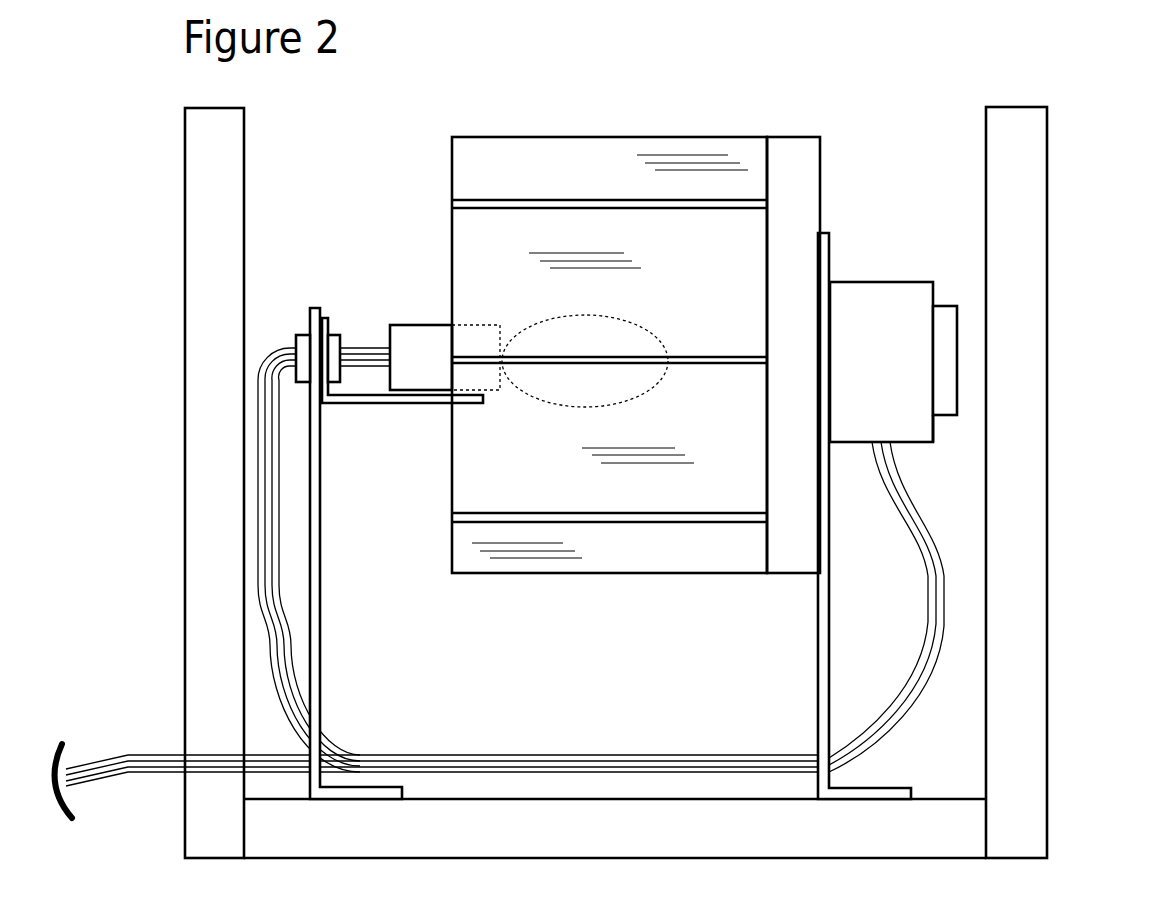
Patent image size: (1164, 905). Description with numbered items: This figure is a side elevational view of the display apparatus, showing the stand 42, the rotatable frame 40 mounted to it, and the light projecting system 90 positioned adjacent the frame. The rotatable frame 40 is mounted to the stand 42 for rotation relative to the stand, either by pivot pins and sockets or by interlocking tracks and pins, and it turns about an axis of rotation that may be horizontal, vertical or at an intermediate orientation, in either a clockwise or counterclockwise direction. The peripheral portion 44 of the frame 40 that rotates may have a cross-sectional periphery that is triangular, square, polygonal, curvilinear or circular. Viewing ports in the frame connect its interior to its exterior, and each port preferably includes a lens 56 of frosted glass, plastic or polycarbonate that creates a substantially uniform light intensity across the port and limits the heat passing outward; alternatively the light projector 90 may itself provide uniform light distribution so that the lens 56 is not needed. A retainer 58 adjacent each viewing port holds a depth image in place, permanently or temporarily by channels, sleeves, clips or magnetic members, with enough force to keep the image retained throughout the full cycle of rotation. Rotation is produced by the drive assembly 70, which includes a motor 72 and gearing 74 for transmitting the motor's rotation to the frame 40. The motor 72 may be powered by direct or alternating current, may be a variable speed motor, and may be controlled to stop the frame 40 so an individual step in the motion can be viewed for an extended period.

The rotatable frame 40 is at (786, 137).
The stand 42 is at (202, 411).
The peripheral portion 44 is at (451, 137).
The lens 56 is at (452, 483).
The retainer 58 is at (618, 200).
The drive assembly 70 is at (962, 307).
The motor 72 is at (912, 371).
The gearing 74 is at (937, 427).
The light projecting system 90 is at (420, 323).